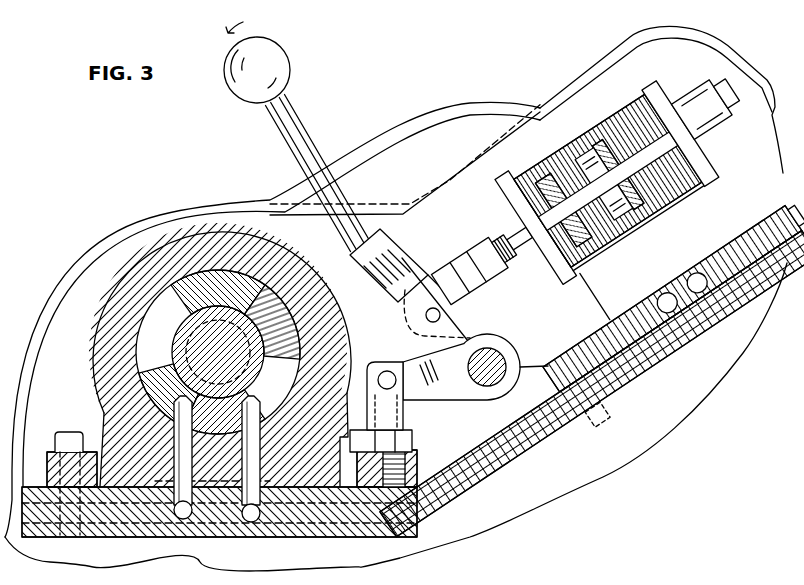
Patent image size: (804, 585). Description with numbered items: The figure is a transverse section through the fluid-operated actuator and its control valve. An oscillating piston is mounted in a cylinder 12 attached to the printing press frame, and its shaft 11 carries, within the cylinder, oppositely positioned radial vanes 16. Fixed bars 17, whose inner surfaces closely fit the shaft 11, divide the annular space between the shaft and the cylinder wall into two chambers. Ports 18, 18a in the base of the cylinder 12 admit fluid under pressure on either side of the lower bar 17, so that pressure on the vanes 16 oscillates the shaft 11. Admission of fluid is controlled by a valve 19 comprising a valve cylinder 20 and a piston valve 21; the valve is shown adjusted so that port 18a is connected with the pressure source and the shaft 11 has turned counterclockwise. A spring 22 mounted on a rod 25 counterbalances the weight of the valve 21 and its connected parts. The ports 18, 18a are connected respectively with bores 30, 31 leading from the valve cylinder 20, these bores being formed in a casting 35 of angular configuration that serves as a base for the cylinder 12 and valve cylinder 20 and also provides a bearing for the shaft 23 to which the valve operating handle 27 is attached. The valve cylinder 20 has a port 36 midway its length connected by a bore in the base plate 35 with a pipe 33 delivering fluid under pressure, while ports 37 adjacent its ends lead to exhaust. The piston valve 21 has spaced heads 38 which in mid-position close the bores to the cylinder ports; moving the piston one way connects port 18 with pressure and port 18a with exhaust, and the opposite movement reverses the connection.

The shaft 11 is at (258, 353).
The cylinder 12 is at (177, 238).
The radial vanes 16 is at (173, 380).
The fixed bars 17 is at (182, 303).
The port 18 is at (180, 452).
The port 18a is at (260, 448).
The valve 19 is at (642, 68).
The valve cylinder 20 is at (616, 208).
The piston valve 21 is at (485, 260).
The spring 22 is at (410, 442).
The shaft 23 is at (497, 357).
The rod 25 is at (383, 402).
The valve operating handle 27 is at (293, 104).
The bore 30 is at (183, 517).
The bore 31 is at (253, 517).
The pipe 33 is at (778, 207).
The casting 35 is at (332, 527).
The port 36 is at (604, 184).
The ports 37 is at (589, 192).
The spaced heads 38 is at (608, 180).